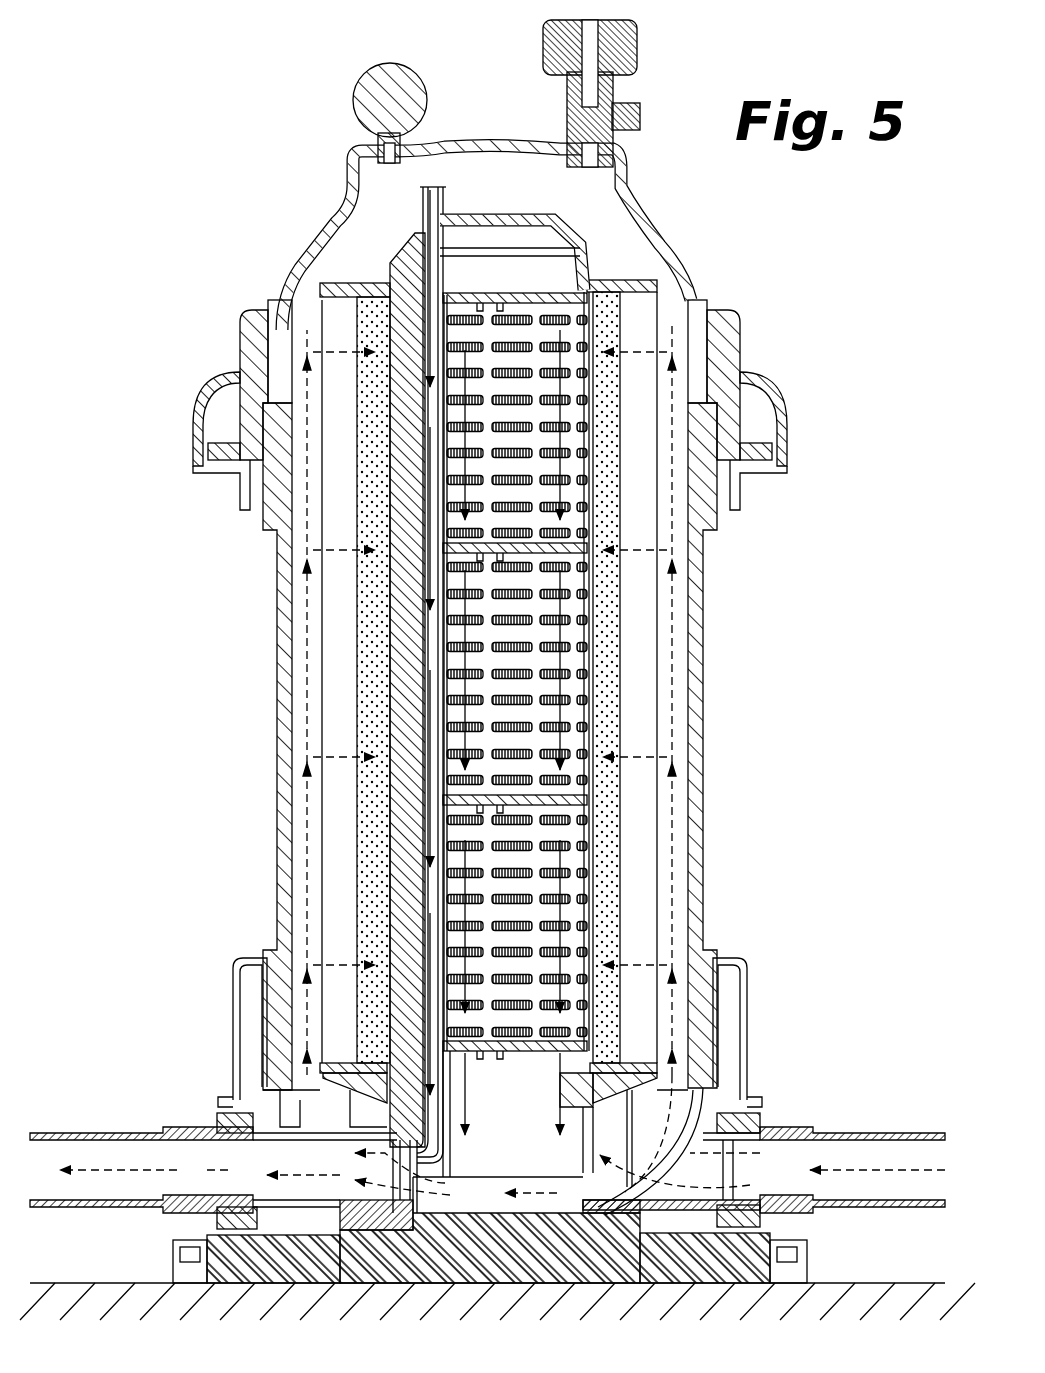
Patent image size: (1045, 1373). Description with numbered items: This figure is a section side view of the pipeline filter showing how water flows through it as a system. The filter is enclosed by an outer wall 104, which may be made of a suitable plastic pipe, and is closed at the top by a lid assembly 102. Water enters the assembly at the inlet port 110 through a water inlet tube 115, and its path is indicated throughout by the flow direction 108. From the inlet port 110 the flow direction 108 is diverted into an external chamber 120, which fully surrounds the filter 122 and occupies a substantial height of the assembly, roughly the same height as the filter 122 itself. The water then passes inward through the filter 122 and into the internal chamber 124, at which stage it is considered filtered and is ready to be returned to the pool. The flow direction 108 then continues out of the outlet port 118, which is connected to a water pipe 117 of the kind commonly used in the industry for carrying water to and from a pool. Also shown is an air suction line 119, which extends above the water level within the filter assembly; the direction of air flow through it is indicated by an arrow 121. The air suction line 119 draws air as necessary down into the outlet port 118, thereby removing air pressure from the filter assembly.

The lid assembly 102 is at (170, 28).
The outer wall 104 is at (697, 685).
The flow direction 108 is at (640, 335).
The inlet port 110 is at (790, 1130).
The water inlet tube 115 is at (931, 1160).
The water pipe 117 is at (50, 1157).
The outlet port 118 is at (197, 1130).
The air suction line 119 is at (430, 192).
The external chamber 120 is at (640, 624).
The arrow 121 is at (390, 262).
The filter 122 is at (573, 887).
The internal chamber 124 is at (540, 1062).